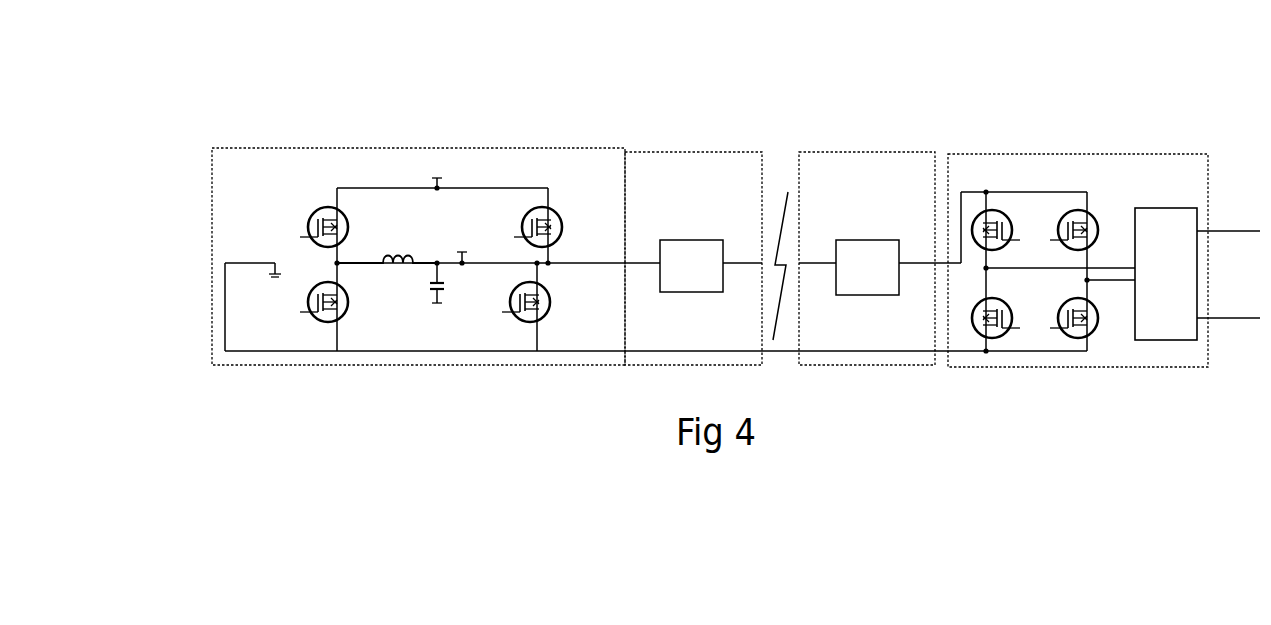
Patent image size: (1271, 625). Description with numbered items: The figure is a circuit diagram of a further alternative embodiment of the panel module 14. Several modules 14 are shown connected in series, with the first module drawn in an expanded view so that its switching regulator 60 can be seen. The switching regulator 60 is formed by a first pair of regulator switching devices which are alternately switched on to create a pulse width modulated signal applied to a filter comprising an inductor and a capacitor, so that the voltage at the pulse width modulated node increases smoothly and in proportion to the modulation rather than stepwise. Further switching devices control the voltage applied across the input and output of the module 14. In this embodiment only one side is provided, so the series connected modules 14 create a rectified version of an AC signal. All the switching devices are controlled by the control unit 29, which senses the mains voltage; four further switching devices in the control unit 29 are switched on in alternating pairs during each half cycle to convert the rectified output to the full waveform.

The module 14 is at (468, 148).
The switching regulator 60 is at (278, 222).
The control unit 29 is at (1153, 242).